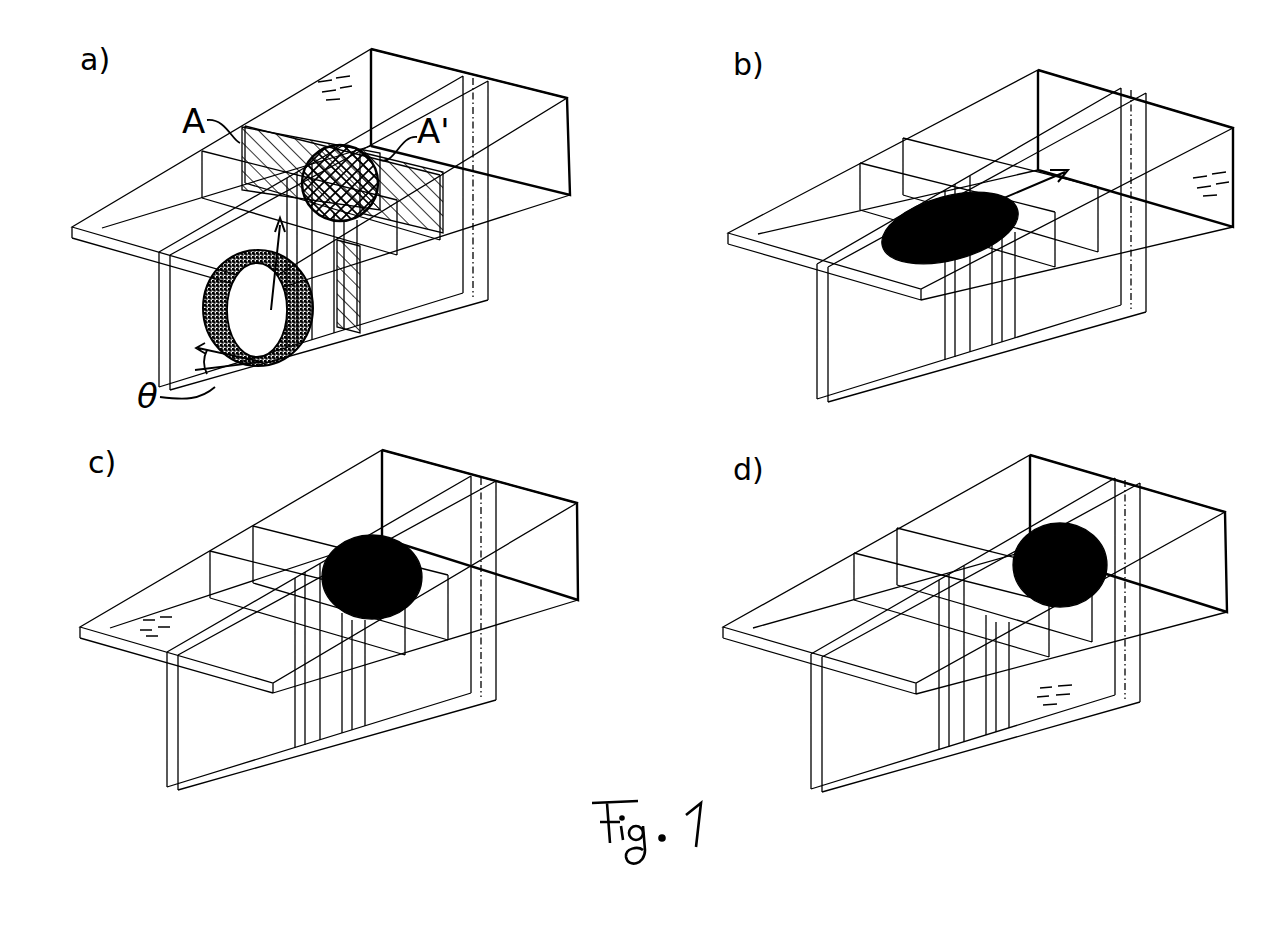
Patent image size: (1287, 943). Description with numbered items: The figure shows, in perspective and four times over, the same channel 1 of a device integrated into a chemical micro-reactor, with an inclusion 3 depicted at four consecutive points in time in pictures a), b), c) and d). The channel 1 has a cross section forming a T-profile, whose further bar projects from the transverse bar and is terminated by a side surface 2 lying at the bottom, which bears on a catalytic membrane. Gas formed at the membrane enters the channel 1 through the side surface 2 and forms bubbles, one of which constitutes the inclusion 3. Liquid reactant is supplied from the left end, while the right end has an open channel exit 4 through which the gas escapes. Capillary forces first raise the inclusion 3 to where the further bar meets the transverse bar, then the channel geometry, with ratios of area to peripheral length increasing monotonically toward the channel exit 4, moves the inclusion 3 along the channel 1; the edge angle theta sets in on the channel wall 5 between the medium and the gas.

The channel 1 is at (152, 166).
The side surface 2 is at (470, 300).
The inclusion 3 is at (203, 317).
The channel exit 4 is at (520, 80).
The channel wall 5 is at (323, 98).